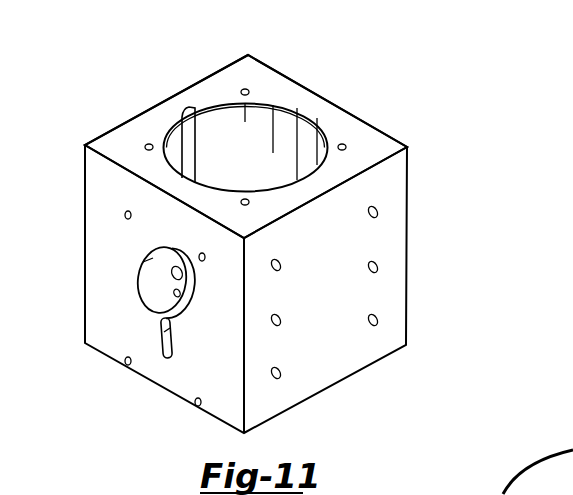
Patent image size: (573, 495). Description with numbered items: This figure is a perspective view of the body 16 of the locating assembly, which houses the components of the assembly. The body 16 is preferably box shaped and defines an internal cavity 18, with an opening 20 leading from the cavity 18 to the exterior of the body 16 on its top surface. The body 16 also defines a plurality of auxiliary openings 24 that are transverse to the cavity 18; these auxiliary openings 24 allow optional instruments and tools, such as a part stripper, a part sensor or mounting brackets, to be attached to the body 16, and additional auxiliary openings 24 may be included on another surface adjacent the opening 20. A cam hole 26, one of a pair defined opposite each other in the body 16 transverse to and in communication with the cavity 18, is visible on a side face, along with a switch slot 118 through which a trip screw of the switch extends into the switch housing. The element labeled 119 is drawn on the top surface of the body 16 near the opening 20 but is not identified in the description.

The block body 16 is at (85, 188).
The bore 18 is at (257, 173).
The bore rim 20 is at (293, 112).
The mounting hole 24 is at (378, 212).
The knob 26 is at (176, 274).
The slot 118 is at (165, 330).
The top surface 119 is at (370, 130).